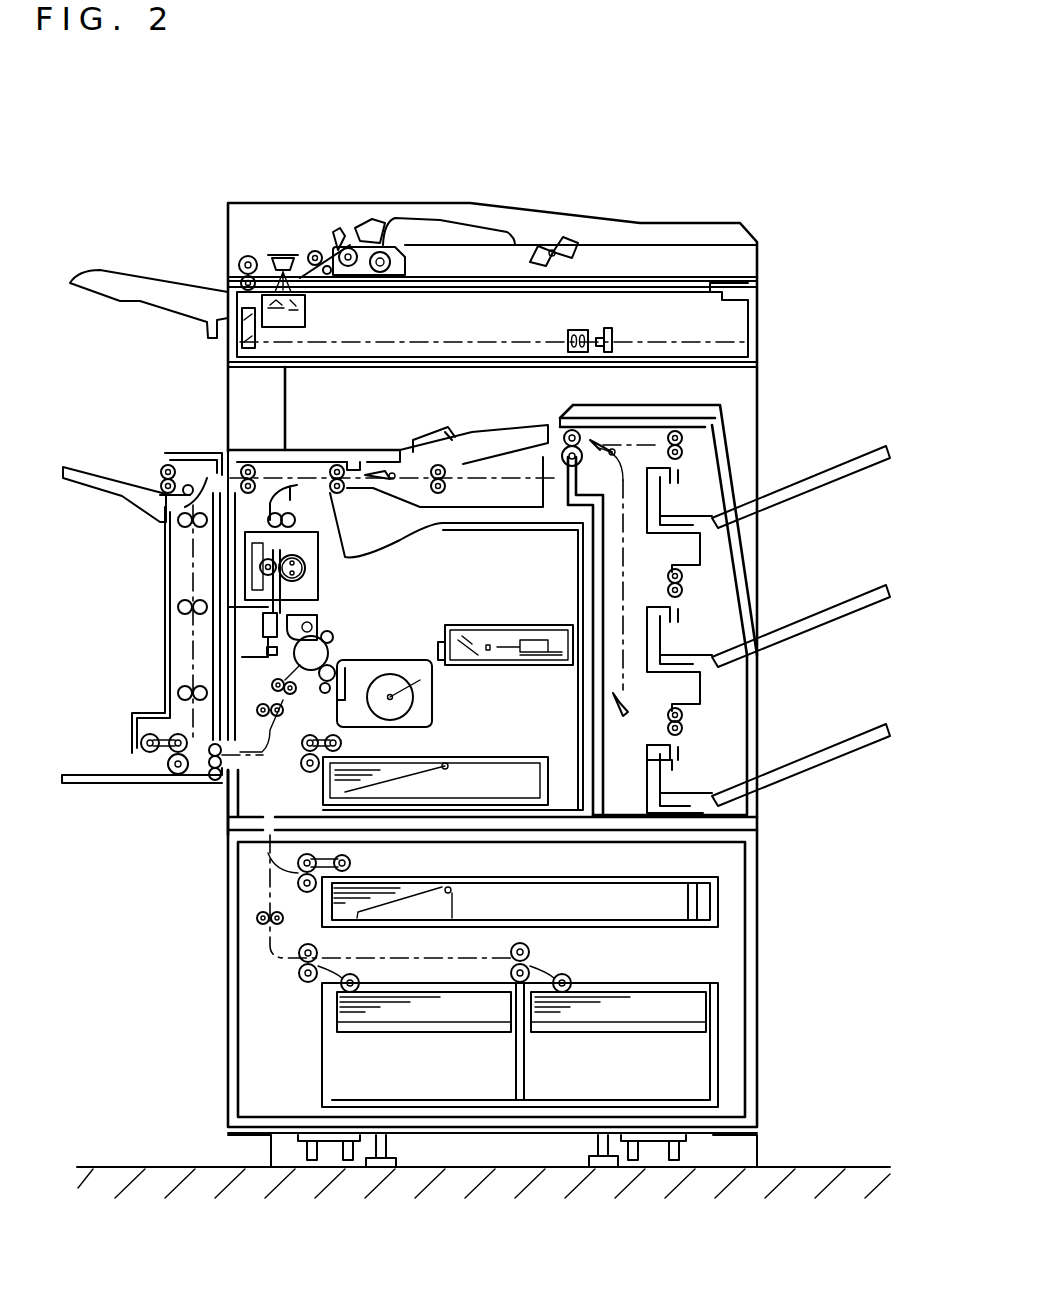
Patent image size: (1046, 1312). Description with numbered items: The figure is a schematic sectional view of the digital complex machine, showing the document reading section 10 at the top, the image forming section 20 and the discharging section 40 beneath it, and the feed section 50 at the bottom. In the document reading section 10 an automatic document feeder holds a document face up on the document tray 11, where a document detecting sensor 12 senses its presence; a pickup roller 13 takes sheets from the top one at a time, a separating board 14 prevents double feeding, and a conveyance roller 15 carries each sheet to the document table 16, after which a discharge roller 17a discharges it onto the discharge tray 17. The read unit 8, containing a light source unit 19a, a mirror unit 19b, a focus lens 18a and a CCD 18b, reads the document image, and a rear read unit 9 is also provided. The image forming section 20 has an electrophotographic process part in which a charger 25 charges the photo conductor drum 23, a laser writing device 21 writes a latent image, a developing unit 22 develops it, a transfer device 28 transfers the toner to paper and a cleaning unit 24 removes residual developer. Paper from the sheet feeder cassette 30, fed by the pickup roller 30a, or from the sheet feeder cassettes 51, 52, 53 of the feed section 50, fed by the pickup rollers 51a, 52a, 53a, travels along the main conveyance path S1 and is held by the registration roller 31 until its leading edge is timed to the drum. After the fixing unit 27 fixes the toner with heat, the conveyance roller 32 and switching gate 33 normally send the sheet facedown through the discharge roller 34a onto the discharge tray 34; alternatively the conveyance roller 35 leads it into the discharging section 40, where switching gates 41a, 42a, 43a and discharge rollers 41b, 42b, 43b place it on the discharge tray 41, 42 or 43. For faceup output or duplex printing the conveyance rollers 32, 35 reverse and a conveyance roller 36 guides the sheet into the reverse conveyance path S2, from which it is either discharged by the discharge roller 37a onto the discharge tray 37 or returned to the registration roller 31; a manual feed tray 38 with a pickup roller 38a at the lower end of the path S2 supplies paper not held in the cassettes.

The read unit 8 is at (745, 326).
The rear read unit 9 is at (283, 253).
The document reading section 10 is at (784, 241).
The document tray 11 is at (455, 218).
The document detecting sensor 12 is at (560, 238).
The pickup roller 13 is at (385, 276).
The separating board 14 is at (318, 250).
The conveyance roller 15 is at (343, 232).
The document table 16 is at (708, 292).
The discharge tray 17 is at (122, 284).
The discharge roller 17a is at (240, 256).
The focus lens 18a is at (570, 333).
The CCD 18b is at (615, 340).
The light source unit 19a is at (306, 320).
The mirror unit 19b is at (242, 340).
The image forming section 20 is at (240, 447).
The laser writing device 21 is at (535, 625).
The developing unit 22 is at (433, 690).
The photo conductor drum 23 is at (330, 640).
The cleaning unit 24 is at (272, 600).
The charger 25 is at (332, 637).
The fixing unit 27 is at (320, 575).
The transfer device 28 is at (265, 630).
The sheet feeder cassette 30 is at (512, 758).
The pickup roller 30a is at (345, 745).
The registration roller 31 is at (288, 692).
The conveyance roller 32 is at (340, 464).
The switching gate 33 is at (372, 472).
The discharge tray 34 is at (550, 438).
The discharge roller 34a is at (470, 445).
The conveyance roller 35 is at (417, 440).
The conveyance roller 36 is at (257, 468).
The discharge tray 37 is at (77, 468).
The discharge roller 37a is at (160, 470).
The manual feed tray 38 is at (107, 775).
The pickup roller 38a is at (180, 778).
The discharging section 40 is at (751, 404).
The discharge tray 41 is at (857, 450).
The switching gate 41a is at (595, 442).
The discharge roller 41b is at (683, 440).
The discharge tray 42 is at (857, 590).
The switching gate 42a is at (624, 571).
The discharge roller 42b is at (683, 578).
The discharge tray 43 is at (848, 735).
The switching gate 43a is at (632, 703).
The discharge roller 43b is at (683, 716).
The feed section 50 is at (784, 989).
The sheet feeder cassette 51 is at (682, 902).
The pickup roller 51a is at (302, 850).
The sheet feeder cassette 52 is at (347, 1070).
The pickup roller 52a is at (340, 990).
The sheet feeder cassette 53 is at (687, 1068).
The pickup roller 53a is at (570, 975).
The main conveyance path S1 is at (270, 800).
The reverse conveyance path S2 is at (193, 658).